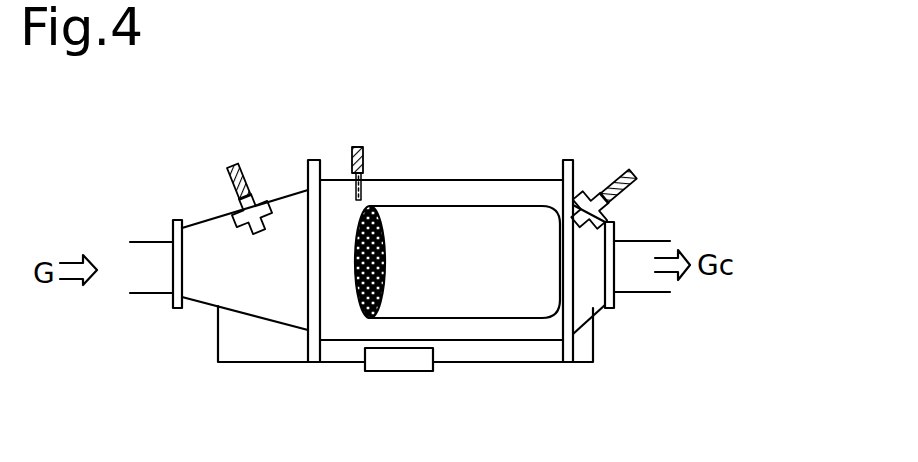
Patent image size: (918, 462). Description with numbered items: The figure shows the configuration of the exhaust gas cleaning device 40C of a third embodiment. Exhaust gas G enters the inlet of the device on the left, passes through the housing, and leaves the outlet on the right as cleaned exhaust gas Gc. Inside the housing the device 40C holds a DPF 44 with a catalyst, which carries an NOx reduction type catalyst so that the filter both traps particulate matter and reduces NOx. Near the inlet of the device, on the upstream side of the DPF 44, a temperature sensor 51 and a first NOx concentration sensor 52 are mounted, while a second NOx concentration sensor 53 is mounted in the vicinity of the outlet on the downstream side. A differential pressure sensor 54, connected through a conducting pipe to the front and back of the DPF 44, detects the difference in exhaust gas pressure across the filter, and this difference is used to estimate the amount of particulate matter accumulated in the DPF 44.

The exhaust gas cleaning device 40C is at (536, 174).
The DPF with a catalyst 44 is at (472, 230).
The temperature sensor 51 is at (360, 146).
The first NOx concentration sensor 52 is at (250, 168).
The second NOx concentration sensor 53 is at (627, 192).
The differential pressure sensor 54 is at (422, 371).